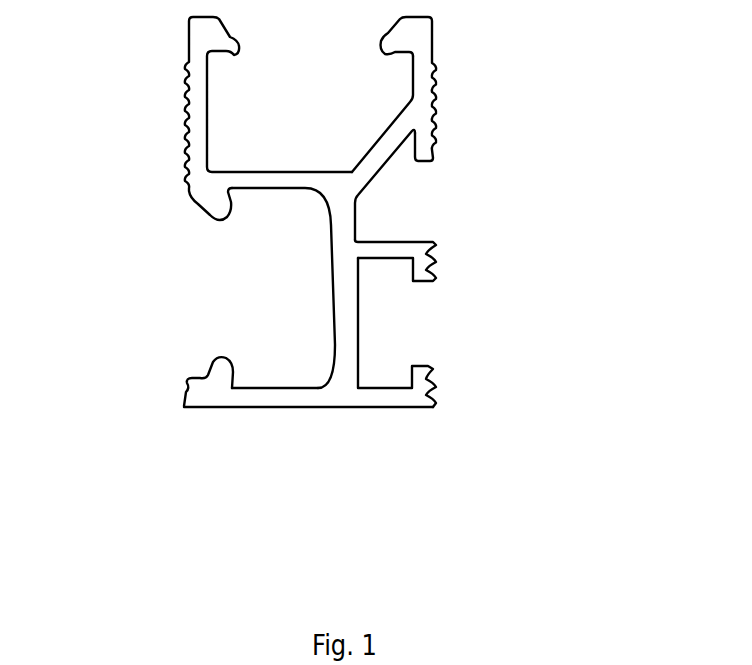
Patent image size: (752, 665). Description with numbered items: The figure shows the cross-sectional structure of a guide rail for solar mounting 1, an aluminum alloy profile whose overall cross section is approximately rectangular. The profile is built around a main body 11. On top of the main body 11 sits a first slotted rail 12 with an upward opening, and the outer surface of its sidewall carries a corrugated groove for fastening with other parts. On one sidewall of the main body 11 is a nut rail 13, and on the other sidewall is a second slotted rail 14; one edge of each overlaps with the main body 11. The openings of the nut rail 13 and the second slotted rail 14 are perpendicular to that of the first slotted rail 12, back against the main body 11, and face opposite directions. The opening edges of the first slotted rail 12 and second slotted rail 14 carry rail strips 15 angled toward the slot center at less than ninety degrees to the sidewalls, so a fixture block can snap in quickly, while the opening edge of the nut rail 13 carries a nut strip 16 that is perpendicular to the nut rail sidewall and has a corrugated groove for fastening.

The guide rail for solar mounting 1 is at (243, 490).
The main body 11 is at (342, 293).
The first slotted rail 12 is at (332, 145).
The nut rail 13 is at (393, 330).
The second slotted rail 14 is at (283, 298).
The rail strip 15 is at (385, 44).
The nut strip 16 is at (420, 258).